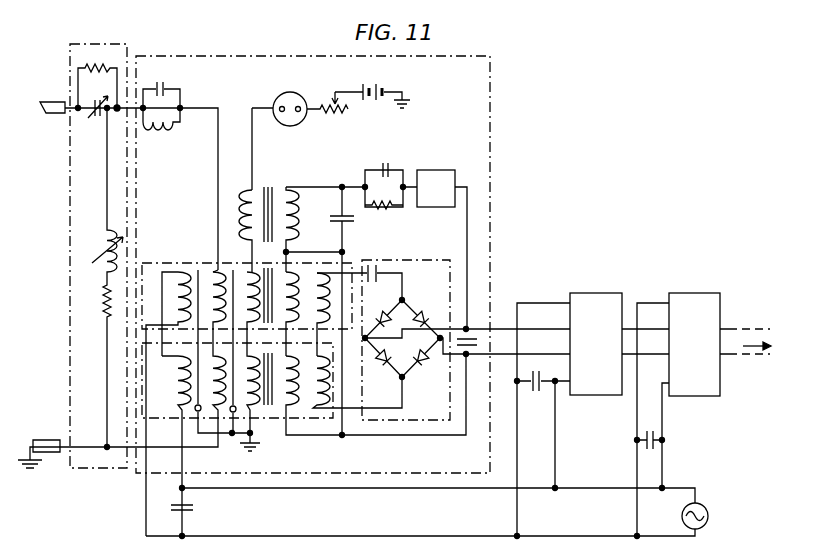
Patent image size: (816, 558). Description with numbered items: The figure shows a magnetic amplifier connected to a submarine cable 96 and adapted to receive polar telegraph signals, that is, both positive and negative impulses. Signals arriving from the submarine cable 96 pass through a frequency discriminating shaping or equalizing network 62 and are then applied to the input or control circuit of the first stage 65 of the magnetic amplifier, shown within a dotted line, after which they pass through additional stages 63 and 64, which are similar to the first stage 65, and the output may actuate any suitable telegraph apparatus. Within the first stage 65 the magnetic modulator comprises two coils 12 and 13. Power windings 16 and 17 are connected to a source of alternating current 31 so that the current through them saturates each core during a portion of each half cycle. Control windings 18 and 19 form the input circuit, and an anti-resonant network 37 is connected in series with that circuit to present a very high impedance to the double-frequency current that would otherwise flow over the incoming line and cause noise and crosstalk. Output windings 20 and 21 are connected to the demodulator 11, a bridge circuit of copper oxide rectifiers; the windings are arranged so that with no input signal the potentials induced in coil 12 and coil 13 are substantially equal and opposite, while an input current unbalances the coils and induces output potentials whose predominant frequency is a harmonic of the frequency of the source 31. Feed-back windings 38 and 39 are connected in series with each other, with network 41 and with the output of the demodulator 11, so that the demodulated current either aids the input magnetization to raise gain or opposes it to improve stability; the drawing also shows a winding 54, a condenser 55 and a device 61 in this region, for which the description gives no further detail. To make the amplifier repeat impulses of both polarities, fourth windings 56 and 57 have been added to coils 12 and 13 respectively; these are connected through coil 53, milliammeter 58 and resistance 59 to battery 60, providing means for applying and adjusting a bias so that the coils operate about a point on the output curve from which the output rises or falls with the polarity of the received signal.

The demodulator 11 is at (412, 263).
The coil 12 is at (347, 263).
The coil 13 is at (272, 425).
The power winding 16 is at (165, 270).
The power winding 17 is at (178, 396).
The control winding 18 is at (216, 272).
The control winding 19 is at (213, 405).
The output winding 20 is at (331, 301).
The output winding 21 is at (331, 393).
The source of alternating current 31 is at (708, 516).
The anti-resonant network 37 is at (172, 118).
The feed-back winding 38 is at (290, 275).
The feed-back winding 39 is at (287, 402).
The network 41 is at (392, 179).
The coil 53 is at (247, 213).
The winding 54 is at (281, 189).
The capacitor 55 is at (335, 214).
The fourth winding 56 is at (245, 276).
The fourth winding 57 is at (248, 410).
The milliammeter 58 is at (288, 97).
The resistance 59 is at (334, 93).
The battery 60 is at (381, 89).
The electrode device 61 is at (434, 180).
The shaping or equalizing network 62 is at (70, 167).
The additional stage 63 is at (595, 305).
The additional stage 64 is at (697, 303).
The first stage 65 is at (492, 165).
The submarine cable 96 is at (58, 118).